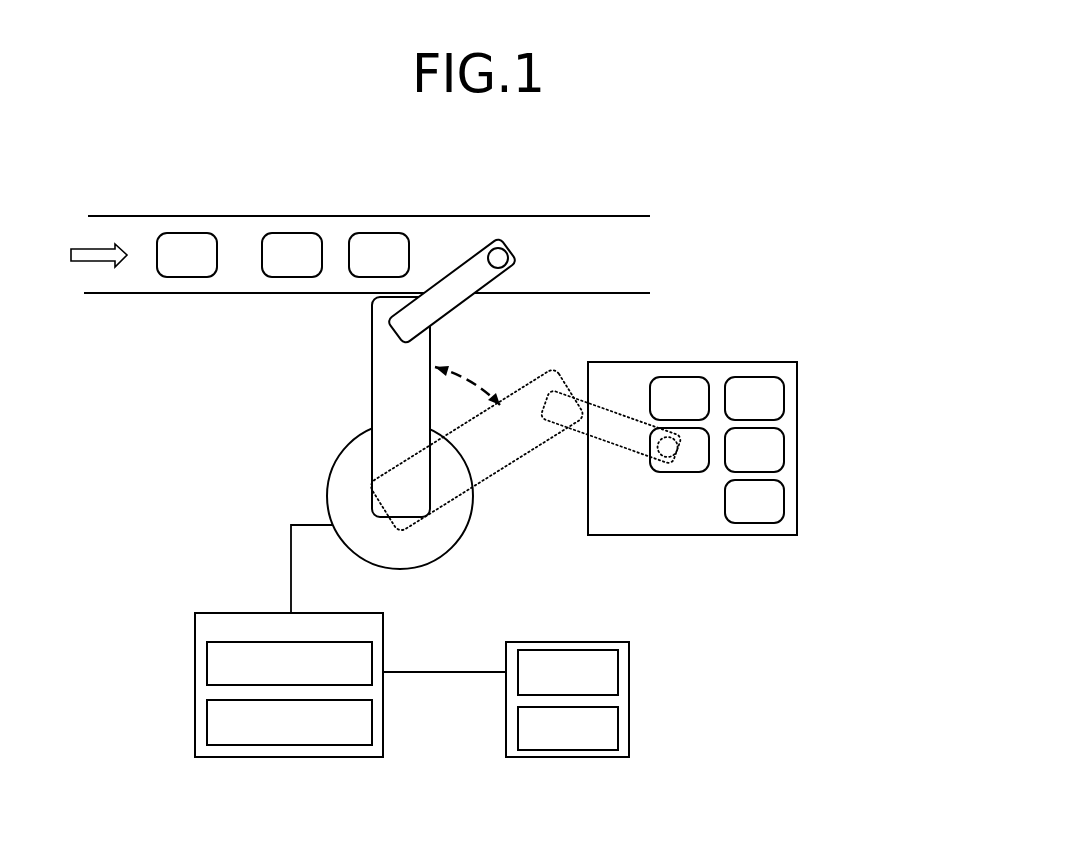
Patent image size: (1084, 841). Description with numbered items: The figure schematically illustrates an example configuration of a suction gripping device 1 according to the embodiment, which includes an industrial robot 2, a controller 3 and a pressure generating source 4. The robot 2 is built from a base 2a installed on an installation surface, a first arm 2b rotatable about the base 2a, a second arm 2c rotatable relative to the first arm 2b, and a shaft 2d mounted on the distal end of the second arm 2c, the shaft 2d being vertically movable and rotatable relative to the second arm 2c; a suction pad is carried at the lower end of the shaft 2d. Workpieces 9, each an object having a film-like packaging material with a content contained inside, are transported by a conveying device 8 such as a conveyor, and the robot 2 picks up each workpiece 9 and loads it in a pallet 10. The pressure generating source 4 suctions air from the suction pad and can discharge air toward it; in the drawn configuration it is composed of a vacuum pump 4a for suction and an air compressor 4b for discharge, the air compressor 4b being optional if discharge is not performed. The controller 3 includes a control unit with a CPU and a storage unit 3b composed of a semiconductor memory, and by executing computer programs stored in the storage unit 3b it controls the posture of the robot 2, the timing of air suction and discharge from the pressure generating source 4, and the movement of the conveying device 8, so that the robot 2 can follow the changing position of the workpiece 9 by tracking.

The suction gripping device 1 is at (172, 525).
The industrial robot 2 is at (322, 413).
The base 2a is at (328, 473).
The first arm 2b is at (372, 385).
The second arm 2c is at (460, 305).
The shaft 2d is at (503, 249).
The controller 3 is at (195, 623).
The storage unit 3b is at (207, 663).
The pressure generating source 4 is at (630, 648).
The vacuum pump 4a is at (618, 672).
The air compressor 4b is at (618, 728).
The conveying device 8 is at (157, 217).
The workpiece 9 is at (195, 233).
The pallet 10 is at (757, 362).